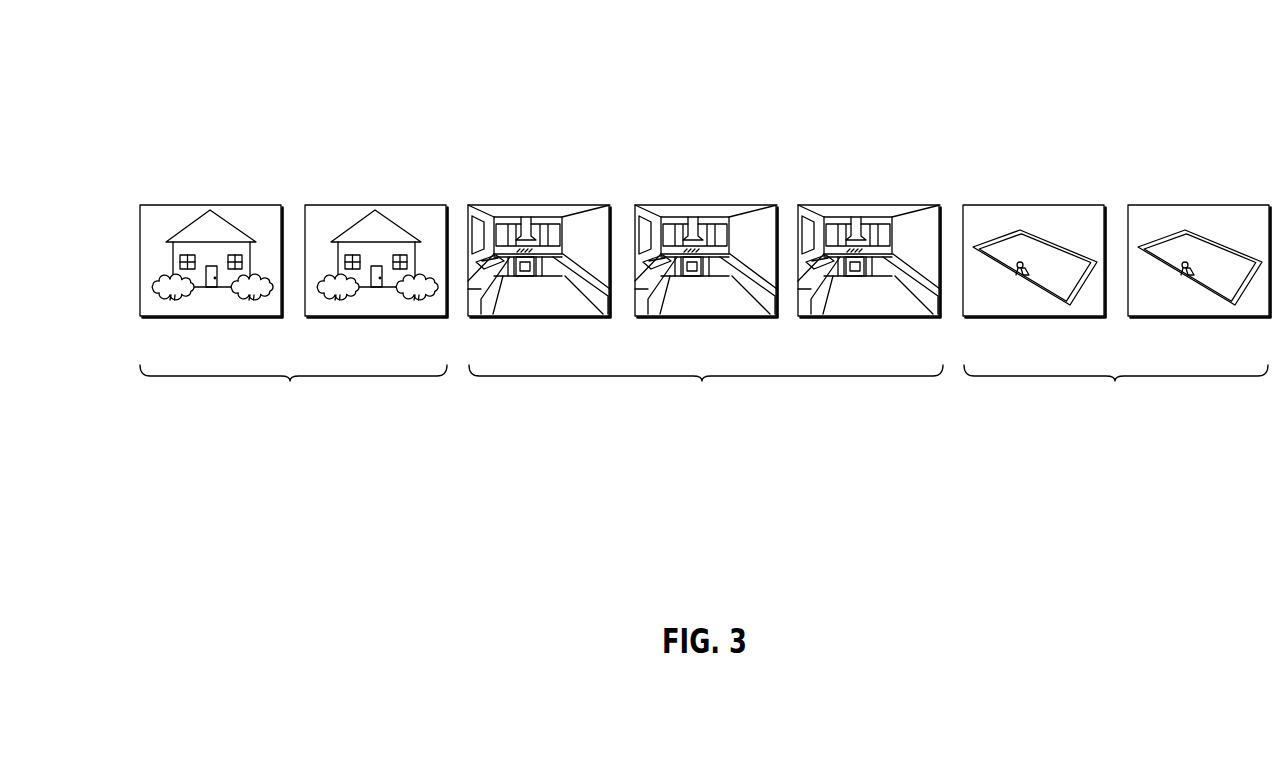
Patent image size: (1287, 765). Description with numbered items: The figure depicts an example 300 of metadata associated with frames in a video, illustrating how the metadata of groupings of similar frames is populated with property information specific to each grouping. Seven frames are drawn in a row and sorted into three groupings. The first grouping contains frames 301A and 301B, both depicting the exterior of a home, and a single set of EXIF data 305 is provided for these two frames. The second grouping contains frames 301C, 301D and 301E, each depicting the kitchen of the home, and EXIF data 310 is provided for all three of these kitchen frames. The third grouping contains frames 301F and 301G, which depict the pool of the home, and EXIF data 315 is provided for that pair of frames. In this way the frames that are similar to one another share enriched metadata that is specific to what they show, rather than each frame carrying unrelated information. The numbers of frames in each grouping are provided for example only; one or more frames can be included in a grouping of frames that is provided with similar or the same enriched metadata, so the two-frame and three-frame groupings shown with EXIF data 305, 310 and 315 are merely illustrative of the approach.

The example of metadata associated with frames in a video 300 is at (243, 52).
The frame depicting the exterior of a home 301A is at (242, 205).
The frame depicting the exterior of a home 301B is at (395, 205).
The frame depicting the kitchen of the home 301C is at (557, 205).
The frame depicting the kitchen of the home 301D is at (722, 205).
The frame depicting the kitchen of the home 301E is at (887, 205).
The frame depicting the pool of the home 301F is at (1053, 205).
The frame depicting the pool of the home 301G is at (1218, 205).
The EXIF data 305 is at (293, 389).
The EXIF data 310 is at (706, 389).
The EXIF data 315 is at (1116, 389).